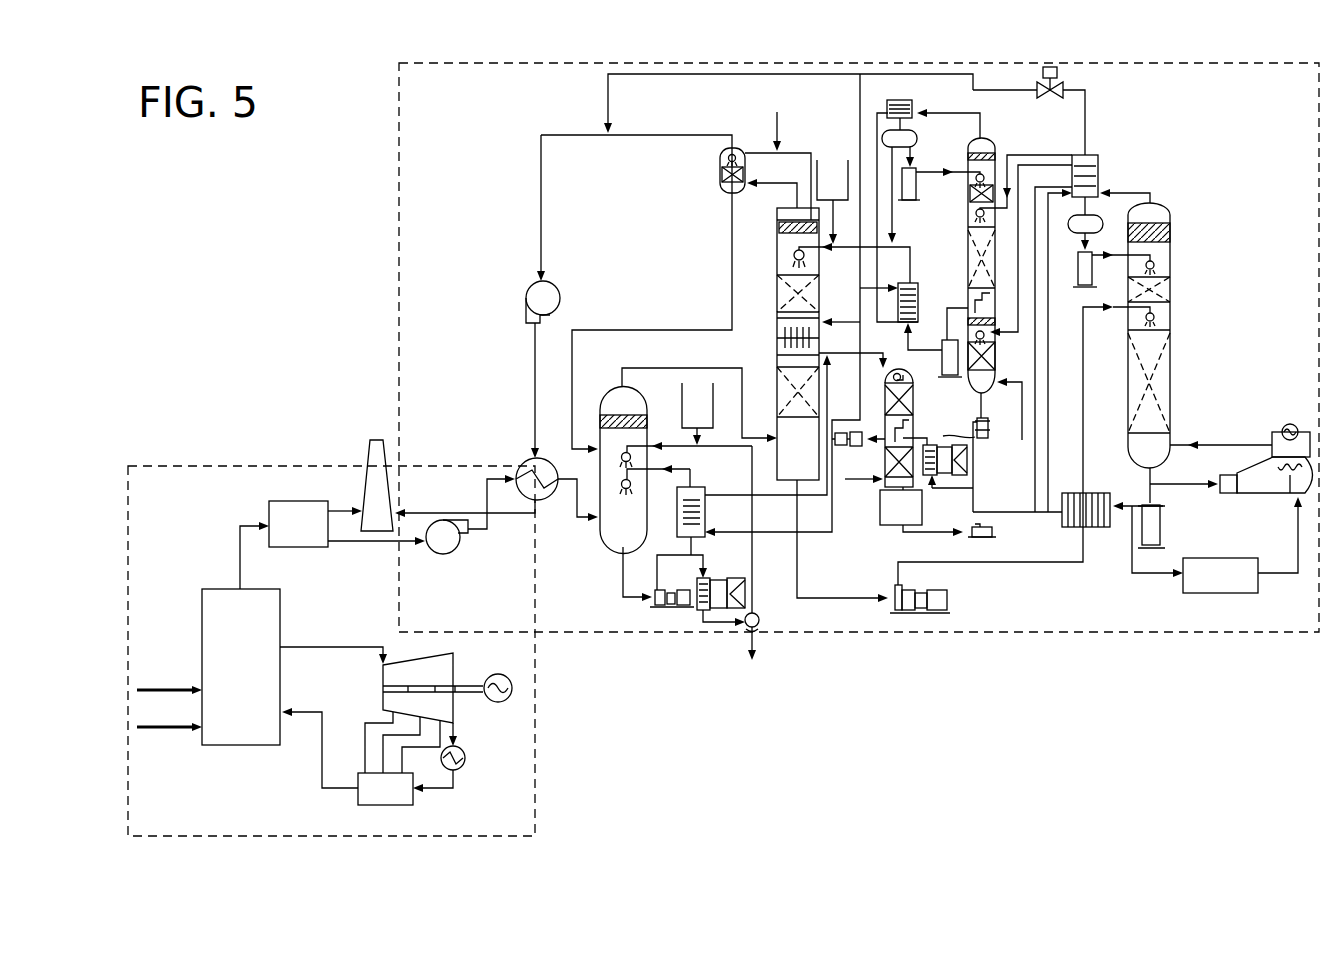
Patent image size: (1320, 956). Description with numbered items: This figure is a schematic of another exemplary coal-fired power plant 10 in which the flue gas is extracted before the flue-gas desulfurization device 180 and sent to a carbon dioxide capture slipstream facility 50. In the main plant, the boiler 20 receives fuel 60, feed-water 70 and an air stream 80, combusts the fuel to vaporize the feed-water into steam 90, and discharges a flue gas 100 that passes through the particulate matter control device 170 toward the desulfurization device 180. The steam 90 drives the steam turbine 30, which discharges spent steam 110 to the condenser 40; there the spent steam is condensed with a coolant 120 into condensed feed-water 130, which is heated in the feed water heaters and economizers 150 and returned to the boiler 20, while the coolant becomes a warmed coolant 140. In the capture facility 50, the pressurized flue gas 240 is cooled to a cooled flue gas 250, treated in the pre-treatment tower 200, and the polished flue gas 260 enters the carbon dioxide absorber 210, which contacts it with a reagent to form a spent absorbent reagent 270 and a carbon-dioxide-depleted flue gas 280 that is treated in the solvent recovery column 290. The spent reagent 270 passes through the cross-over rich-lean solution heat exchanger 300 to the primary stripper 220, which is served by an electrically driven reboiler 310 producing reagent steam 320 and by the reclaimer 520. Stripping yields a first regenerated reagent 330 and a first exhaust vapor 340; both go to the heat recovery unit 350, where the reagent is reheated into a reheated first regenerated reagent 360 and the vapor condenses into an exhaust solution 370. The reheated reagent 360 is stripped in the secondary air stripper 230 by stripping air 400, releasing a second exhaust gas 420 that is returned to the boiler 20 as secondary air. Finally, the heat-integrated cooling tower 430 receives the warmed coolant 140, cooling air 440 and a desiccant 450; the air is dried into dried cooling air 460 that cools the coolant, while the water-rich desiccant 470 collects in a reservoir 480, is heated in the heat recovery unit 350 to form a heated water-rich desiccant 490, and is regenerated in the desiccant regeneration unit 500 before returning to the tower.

The power plant 10 is at (723, 695).
The boiler 20 is at (255, 668).
The steam turbine 30 is at (455, 664).
The condenser 40 is at (466, 758).
The post-combustion processing system 50 is at (1153, 651).
The fuel 60 is at (157, 731).
The feed-water 70 is at (307, 710).
The air stream 80 is at (161, 686).
The steam 90 is at (332, 647).
The flue gas 100 is at (240, 550).
The spent steam 110 is at (457, 731).
The coolant 120 is at (880, 447).
The condensed feed-water 130 is at (433, 788).
The warmed coolant 140 is at (880, 357).
The feed water heaters and economizers 150 is at (358, 800).
The particulate matter control device 170 is at (298, 501).
The flue-gas desulfurization device 180 is at (375, 440).
The pre-treatment tower 200 is at (607, 543).
The carbon dioxide absorber 210 is at (777, 217).
The primary stripper 220 is at (1170, 218).
The secondary air stripper 230 is at (990, 148).
The pressurized flue gas 240 is at (475, 531).
The cooled flue gas 250 is at (580, 527).
The polished flue gas 260 is at (650, 368).
The spent absorbent reagent 270 is at (825, 597).
The carbon-dioxide-depleted flue gas 280 is at (767, 185).
The solvent recovery column 290 is at (720, 192).
The rich-lean solution heat exchanger 300 is at (1062, 522).
The reboiler 310 is at (1263, 493).
The reagent steam 320 is at (1218, 443).
The first regenerated reagent 330 is at (1125, 508).
The first exhaust vapor 340 is at (1150, 193).
The stripper heat recovery unit 350 is at (1098, 157).
The reheated first regenerated reagent 360 is at (1027, 153).
The exhaust solution 370 is at (1085, 112).
The stripping air 400 is at (1022, 417).
The second exhaust gas 420 is at (967, 113).
The heat-integrated cooling tower 430 is at (915, 380).
The cooling air 440 is at (860, 483).
The desiccant 450 is at (913, 465).
The dried cooling air 460 is at (907, 420).
The water-rich desiccant 470 is at (942, 532).
The reservoir 480 is at (887, 527).
The heated water-rich desiccant 490 is at (975, 483).
The desiccant regeneration unit 500 is at (975, 437).
The reclaimer 520 is at (1182, 588).